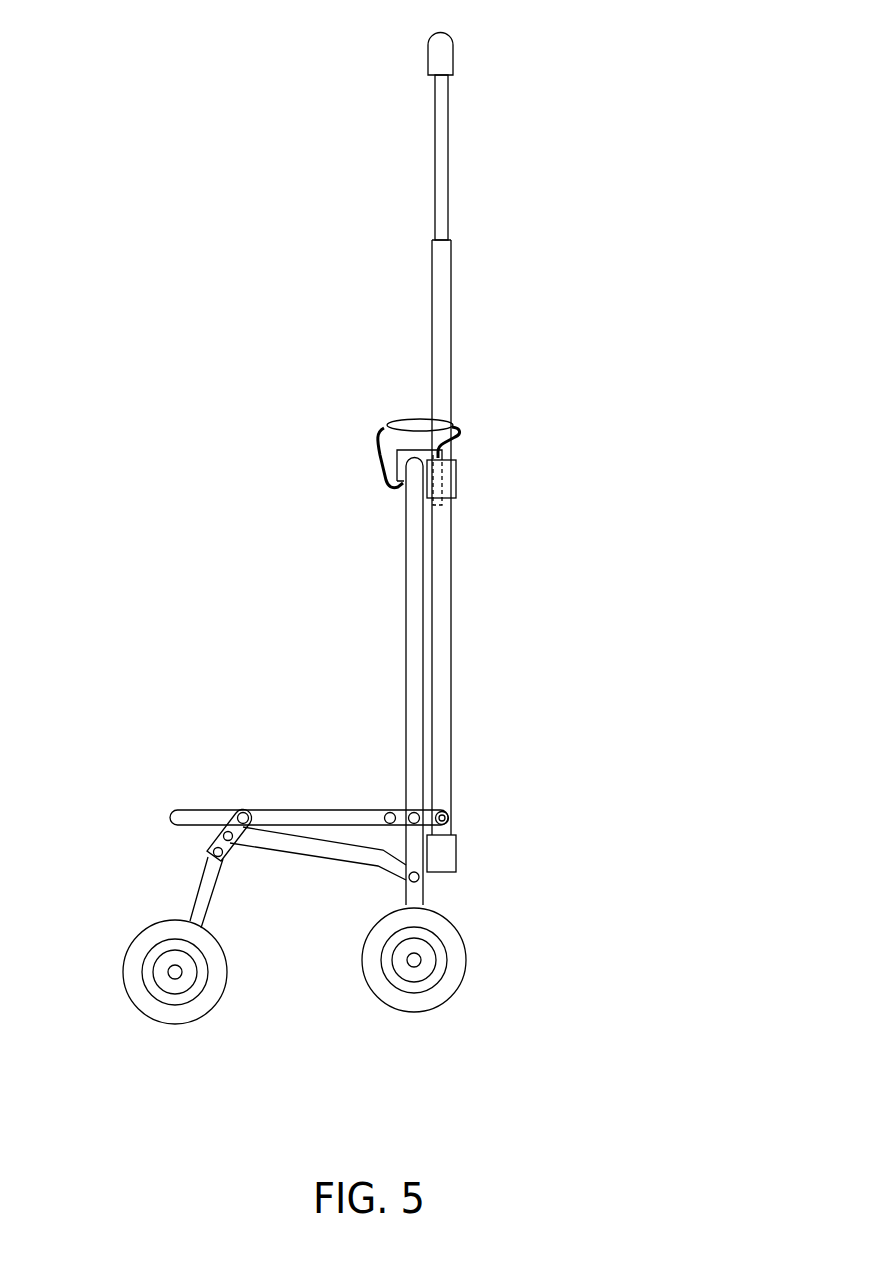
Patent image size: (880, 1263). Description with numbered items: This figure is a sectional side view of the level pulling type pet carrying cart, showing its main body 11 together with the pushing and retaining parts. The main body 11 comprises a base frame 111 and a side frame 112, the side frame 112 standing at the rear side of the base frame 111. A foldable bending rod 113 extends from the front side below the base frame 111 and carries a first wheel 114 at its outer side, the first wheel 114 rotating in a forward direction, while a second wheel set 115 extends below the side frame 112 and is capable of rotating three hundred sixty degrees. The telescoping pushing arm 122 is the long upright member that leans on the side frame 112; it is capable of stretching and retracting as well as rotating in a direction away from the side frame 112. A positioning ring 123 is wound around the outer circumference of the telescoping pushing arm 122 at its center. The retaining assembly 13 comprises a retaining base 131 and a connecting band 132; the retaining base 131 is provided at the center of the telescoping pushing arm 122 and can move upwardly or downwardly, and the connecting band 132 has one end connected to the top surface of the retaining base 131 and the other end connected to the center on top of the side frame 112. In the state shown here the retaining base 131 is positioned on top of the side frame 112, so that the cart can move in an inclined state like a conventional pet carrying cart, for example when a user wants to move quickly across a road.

The main body 11 is at (259, 741).
The base frame 111 is at (303, 810).
The side frame 112 is at (417, 645).
The foldable bending rod 113 is at (197, 890).
The first wheel 114 is at (150, 932).
The second wheel set 115 is at (372, 928).
The telescoping pushing arm 122 is at (438, 62).
The positioning ring 123 is at (452, 483).
The retaining assembly 13 is at (387, 413).
The retaining base 131 is at (398, 455).
The connecting band 132 is at (408, 424).